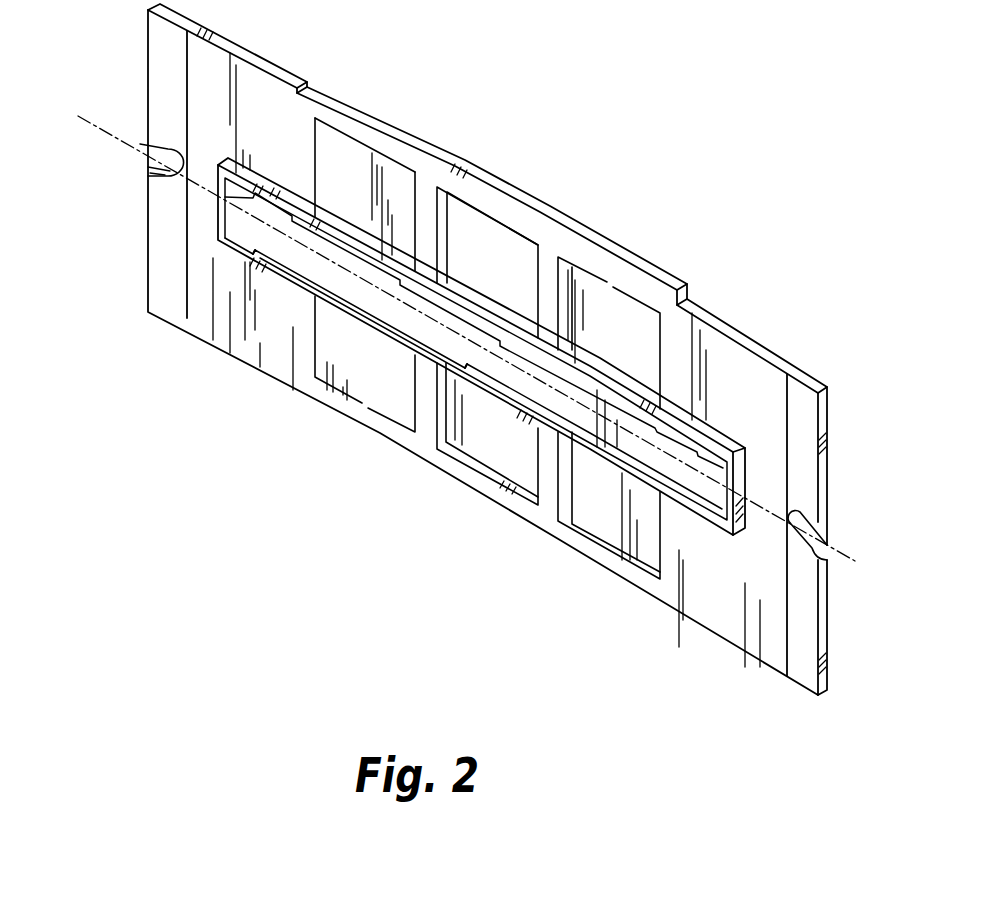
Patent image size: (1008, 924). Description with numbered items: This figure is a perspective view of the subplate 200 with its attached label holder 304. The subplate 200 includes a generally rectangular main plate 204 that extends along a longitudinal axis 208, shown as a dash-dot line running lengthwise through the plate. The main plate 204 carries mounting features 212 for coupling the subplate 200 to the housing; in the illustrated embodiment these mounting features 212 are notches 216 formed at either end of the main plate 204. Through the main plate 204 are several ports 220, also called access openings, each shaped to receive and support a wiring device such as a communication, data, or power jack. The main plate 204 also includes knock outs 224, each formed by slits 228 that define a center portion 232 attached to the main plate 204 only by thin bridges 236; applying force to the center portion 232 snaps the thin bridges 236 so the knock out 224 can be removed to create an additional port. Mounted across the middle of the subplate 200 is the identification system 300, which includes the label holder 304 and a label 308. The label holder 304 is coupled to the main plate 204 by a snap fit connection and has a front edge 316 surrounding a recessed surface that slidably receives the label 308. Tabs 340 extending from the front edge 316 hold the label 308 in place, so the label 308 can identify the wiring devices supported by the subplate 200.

The subplate 200 is at (640, 158).
The main plate 204 is at (720, 353).
The longitudinal axis 208 is at (80, 117).
The mounting features 212 is at (145, 145).
The notches 216 is at (155, 175).
The port 220 is at (495, 233).
The knock out 224 is at (346, 226).
The slits 228 is at (393, 158).
The center portion 232 is at (342, 152).
The thin bridges 236 is at (363, 145).
The identification system 300 is at (509, 368).
The label holder 304 is at (717, 445).
The label 308 is at (657, 463).
The front edge 316 is at (387, 333).
The tabs 340 is at (267, 263).